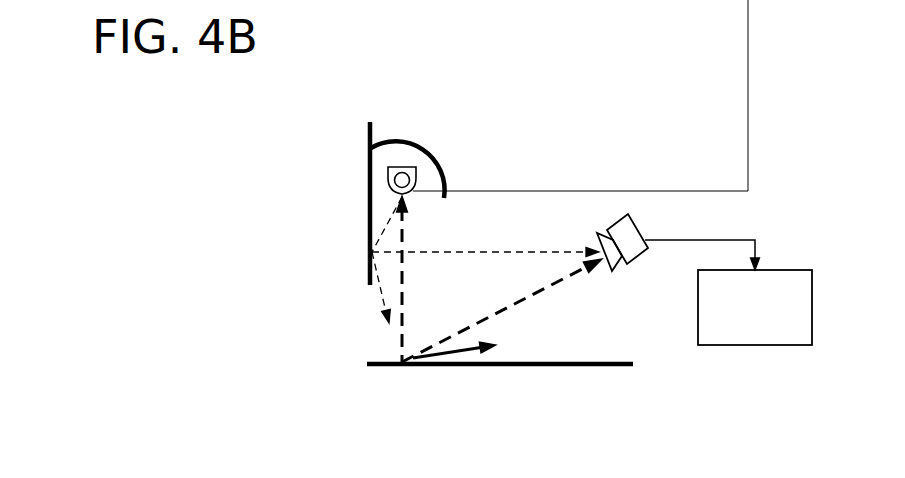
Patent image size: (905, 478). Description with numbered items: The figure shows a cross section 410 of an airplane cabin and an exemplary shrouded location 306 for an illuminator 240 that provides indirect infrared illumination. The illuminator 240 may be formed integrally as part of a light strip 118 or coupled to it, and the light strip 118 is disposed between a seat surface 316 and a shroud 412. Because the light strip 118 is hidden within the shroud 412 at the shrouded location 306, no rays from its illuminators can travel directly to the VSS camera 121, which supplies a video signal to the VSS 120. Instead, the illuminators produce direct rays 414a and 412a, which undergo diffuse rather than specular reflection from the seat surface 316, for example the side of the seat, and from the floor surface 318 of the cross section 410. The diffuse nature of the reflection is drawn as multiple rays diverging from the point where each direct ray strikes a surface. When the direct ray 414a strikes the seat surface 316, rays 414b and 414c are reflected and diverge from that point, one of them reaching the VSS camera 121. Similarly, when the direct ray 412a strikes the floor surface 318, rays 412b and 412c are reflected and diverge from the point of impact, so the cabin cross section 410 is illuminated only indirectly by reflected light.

The cross section 410 is at (577, 122).
The illuminator 240 is at (402, 168).
The shroud 412 is at (402, 146).
The light strip 118 is at (388, 168).
The seat surface 316 is at (368, 180).
The shrouded location 306 is at (425, 198).
The direct ray 414a is at (388, 222).
The reflected ray 414b is at (468, 251).
The reflected ray 414c is at (381, 294).
The direct ray 412a is at (404, 270).
The reflected ray 412b is at (528, 298).
The reflected ray 412c is at (460, 356).
The floor surface 318 is at (582, 362).
The VSS camera 121 is at (643, 222).
The VSS 120 is at (811, 340).